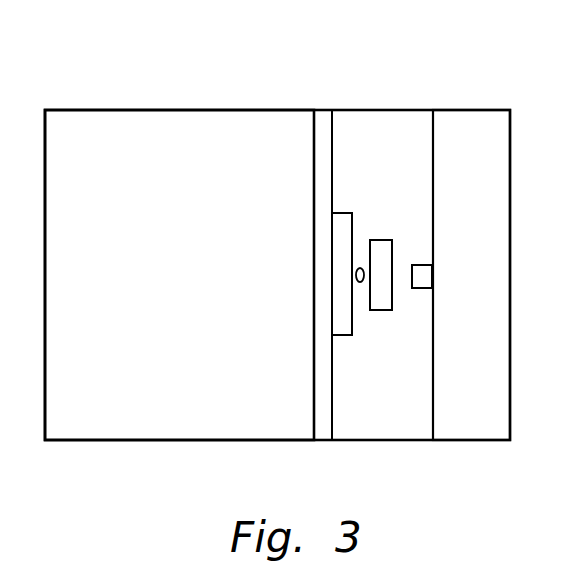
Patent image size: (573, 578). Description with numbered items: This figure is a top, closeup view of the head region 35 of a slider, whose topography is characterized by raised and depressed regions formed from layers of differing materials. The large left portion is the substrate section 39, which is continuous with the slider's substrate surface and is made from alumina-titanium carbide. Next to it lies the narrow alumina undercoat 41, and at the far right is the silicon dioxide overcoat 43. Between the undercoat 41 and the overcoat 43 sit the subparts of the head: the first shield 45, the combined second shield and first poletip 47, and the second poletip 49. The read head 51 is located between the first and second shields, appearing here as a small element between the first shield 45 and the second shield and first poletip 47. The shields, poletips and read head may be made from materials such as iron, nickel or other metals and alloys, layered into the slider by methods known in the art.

The head region 35 is at (208, 72).
The substrate section 39 is at (128, 415).
The alumina undercoat 41 is at (321, 122).
The SiO2 overcoat 43 is at (470, 132).
The shield 1 45 is at (342, 335).
The shield 2/poletip 1 47 is at (378, 310).
The poletip 2 49 is at (425, 280).
The read head 51 is at (360, 268).